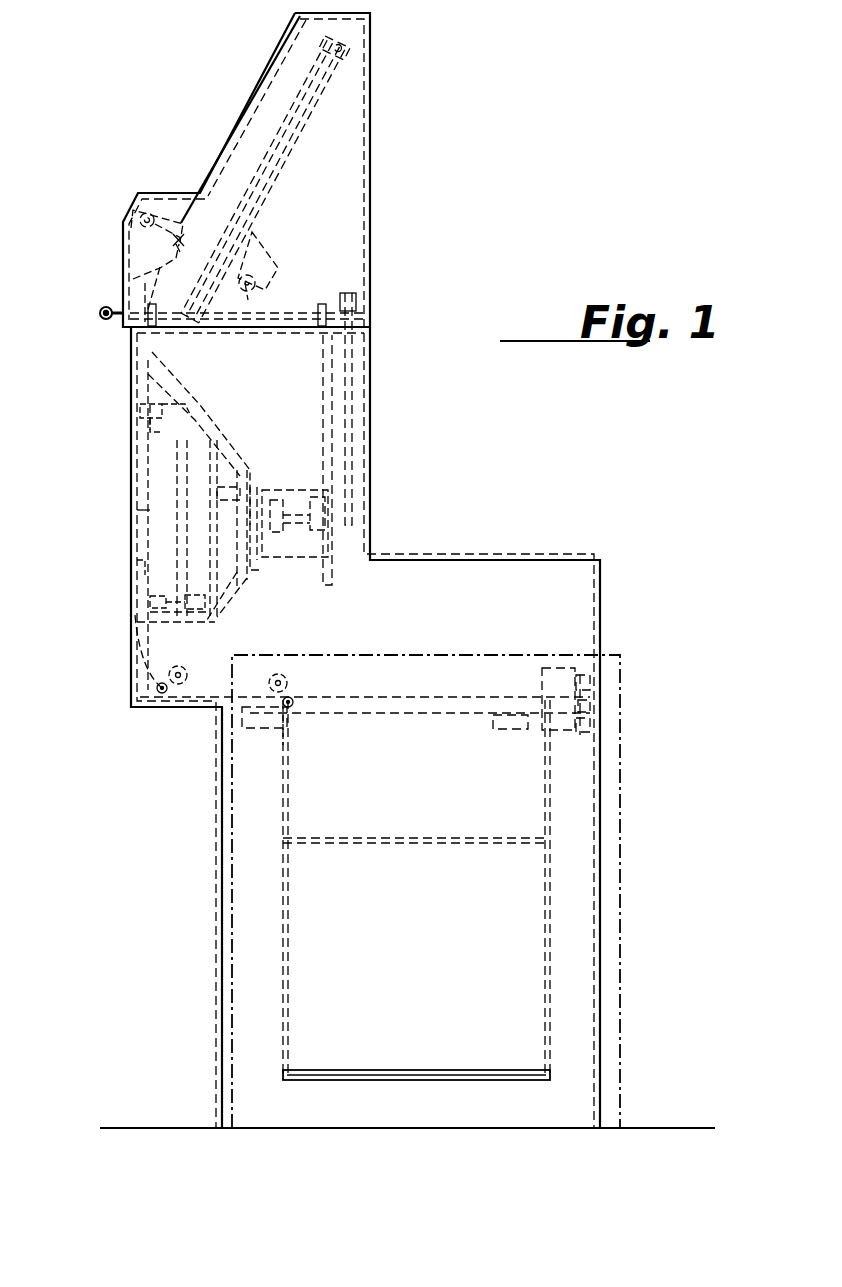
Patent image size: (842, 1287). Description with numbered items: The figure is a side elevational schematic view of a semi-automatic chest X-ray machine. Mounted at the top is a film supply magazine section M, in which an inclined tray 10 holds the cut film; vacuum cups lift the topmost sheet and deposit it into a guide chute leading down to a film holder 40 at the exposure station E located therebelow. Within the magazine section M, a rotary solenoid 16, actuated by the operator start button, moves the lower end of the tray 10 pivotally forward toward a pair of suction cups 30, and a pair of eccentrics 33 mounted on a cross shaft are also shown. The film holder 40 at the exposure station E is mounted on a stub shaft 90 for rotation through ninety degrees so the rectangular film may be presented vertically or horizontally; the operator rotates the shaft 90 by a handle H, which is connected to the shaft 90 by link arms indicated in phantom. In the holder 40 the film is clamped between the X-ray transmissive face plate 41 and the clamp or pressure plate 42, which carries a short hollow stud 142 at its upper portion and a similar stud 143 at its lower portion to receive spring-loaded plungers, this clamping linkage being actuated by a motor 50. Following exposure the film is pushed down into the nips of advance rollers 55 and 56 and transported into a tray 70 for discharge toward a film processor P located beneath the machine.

The film supply magazine section M is at (372, 190).
The handle H is at (98, 314).
The eccentrics 33 is at (130, 206).
The suction cups 30 is at (132, 278).
The inclined tray 10 is at (299, 157).
The rotary solenoid 16 is at (263, 286).
The film holder 40 is at (131, 463).
The short hollow stud 142 is at (136, 419).
The clamp or pressure plate 42 is at (135, 511).
The exposure station E is at (131, 538).
The face plate 41 is at (128, 562).
The hollow stud 143 is at (132, 603).
The stub shaft 90 is at (290, 515).
The motor 50 is at (246, 574).
The advance roller 55 is at (188, 664).
The advance roller 56 is at (286, 668).
The tray 70 is at (398, 705).
The film processor P is at (623, 762).